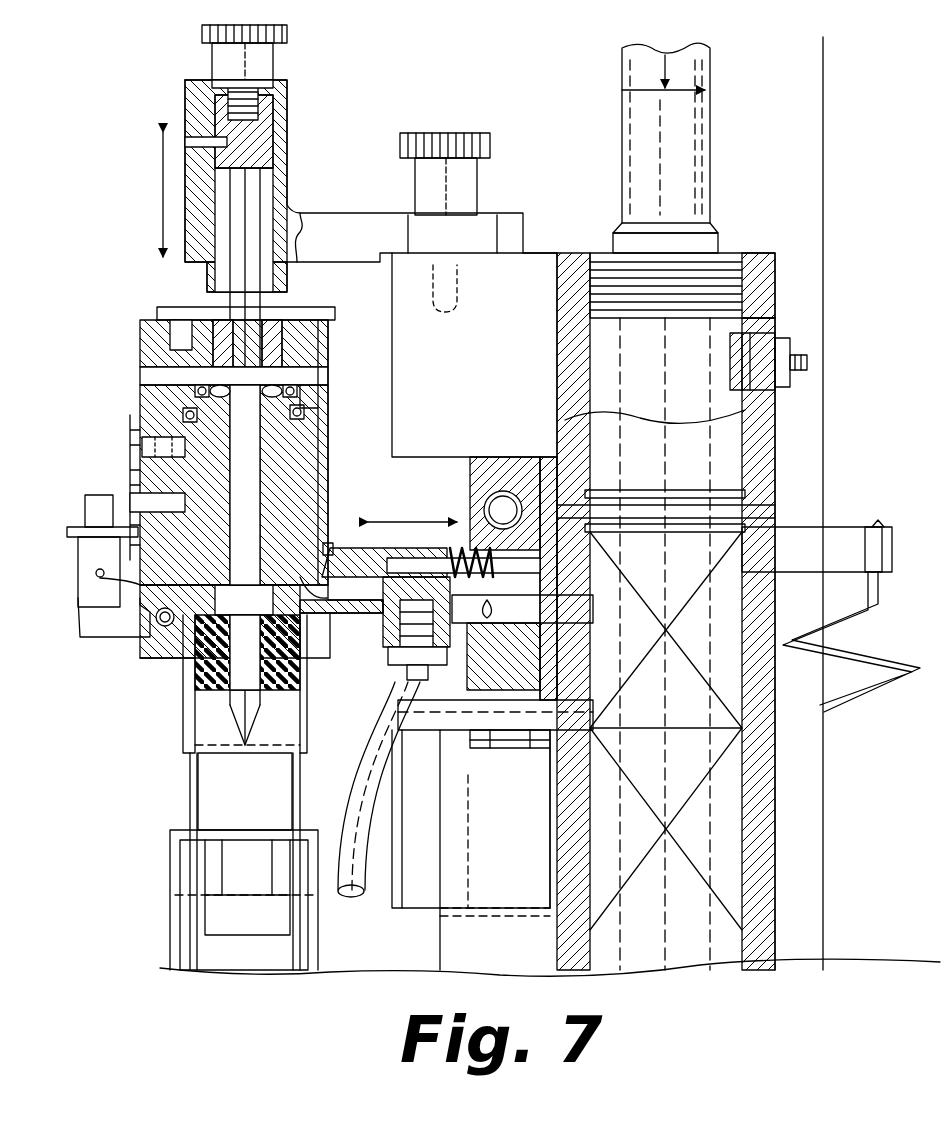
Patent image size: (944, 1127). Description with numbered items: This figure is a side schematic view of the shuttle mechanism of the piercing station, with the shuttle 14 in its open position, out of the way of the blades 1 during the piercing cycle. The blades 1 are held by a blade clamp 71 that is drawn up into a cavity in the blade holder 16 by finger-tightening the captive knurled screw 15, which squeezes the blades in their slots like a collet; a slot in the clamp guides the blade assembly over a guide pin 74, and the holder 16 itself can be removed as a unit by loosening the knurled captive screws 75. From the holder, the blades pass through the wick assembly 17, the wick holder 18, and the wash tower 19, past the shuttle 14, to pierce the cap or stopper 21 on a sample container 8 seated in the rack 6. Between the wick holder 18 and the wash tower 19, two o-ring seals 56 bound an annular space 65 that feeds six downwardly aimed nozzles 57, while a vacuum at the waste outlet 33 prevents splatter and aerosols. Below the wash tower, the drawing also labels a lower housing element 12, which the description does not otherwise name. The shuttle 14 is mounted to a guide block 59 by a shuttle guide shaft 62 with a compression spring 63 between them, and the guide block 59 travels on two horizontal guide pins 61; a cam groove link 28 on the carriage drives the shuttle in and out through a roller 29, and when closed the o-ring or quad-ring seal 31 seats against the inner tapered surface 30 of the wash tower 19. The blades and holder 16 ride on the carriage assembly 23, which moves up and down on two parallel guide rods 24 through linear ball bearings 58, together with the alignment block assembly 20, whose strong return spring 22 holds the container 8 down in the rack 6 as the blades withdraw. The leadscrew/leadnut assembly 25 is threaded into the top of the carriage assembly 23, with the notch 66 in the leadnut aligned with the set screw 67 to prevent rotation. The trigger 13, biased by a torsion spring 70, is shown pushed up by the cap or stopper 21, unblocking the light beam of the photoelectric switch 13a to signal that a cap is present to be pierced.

The blade 1 is at (175, 480).
The rack 6 is at (170, 860).
The sample container 8 is at (190, 795).
The lower housing block 12 is at (170, 660).
The trigger 13 is at (85, 636).
The photoelectric switch 13a is at (78, 560).
The shuttle 14 is at (352, 545).
The captive knurled screw 15 is at (202, 34).
The blade holder 16 is at (300, 213).
The wick assembly 17 is at (158, 312).
The wick holder 18 is at (140, 342).
The wash tower 19 is at (200, 438).
The alignment block assembly 20 is at (778, 785).
The cap or stopper 21 is at (183, 738).
The return spring 22 is at (872, 655).
The carriage assembly 23 is at (775, 432).
The guide rods 24 is at (622, 122).
The leadscrew/leadnut assembly 25 is at (620, 225).
The cam groove link 28 is at (395, 900).
The roller 29 is at (503, 490).
The inner tapered surface 30 is at (120, 590).
The o-ring or quad-ring seal 31 is at (333, 545).
The waste outlet 33 is at (372, 775).
The o-ring seals 56 is at (215, 388).
The nozzles 57 is at (200, 400).
The linear ball bearings 58 is at (775, 870).
The guide block 59 is at (478, 748).
The horizontal guide pins 61 is at (593, 603).
The shuttle guide shaft 62 is at (540, 470).
The compression spring 63 is at (470, 520).
The annular space 65 is at (318, 370).
The notch 66 is at (775, 328).
The set screw 67 is at (807, 365).
The torsion spring 70 is at (150, 650).
The blade clamp 71 is at (270, 115).
The guide pin 74 is at (185, 137).
The knurled captive screws 75 is at (450, 133).